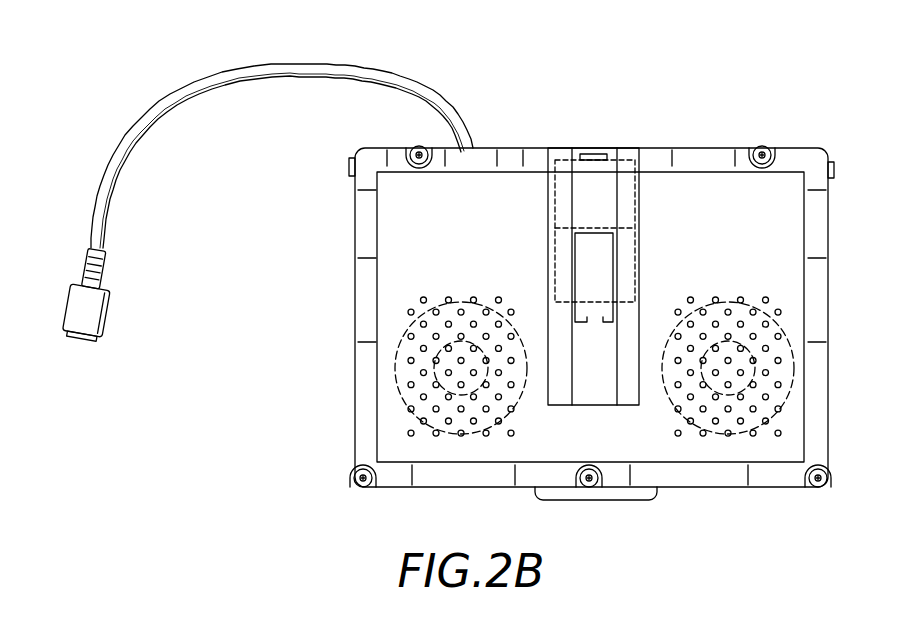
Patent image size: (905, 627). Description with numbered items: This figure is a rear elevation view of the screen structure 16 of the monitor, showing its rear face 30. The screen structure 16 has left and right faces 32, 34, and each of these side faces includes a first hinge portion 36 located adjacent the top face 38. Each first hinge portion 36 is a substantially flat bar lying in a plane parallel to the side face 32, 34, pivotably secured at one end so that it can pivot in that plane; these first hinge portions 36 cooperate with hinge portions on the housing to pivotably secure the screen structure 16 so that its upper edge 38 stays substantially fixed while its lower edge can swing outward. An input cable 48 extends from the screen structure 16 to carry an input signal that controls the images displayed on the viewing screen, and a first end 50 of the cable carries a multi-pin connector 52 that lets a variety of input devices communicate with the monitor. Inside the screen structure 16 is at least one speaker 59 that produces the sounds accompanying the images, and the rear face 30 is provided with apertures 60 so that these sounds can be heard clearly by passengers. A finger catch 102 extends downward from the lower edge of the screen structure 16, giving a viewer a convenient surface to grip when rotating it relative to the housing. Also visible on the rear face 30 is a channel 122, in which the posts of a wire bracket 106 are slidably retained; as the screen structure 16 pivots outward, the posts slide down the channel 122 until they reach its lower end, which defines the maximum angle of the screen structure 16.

The screen structure 16 is at (801, 119).
The rear face 30 is at (503, 183).
The left face 32 is at (829, 290).
The right face 34 is at (352, 318).
The first hinge portion 36 is at (349, 166).
The top face 38 is at (708, 148).
The input cable 48 is at (222, 85).
The first end of the cable 50 is at (93, 245).
The multi-pin connector 52 is at (88, 312).
The speaker 59 is at (396, 360).
The apertures 60 is at (411, 436).
The finger catch 102 is at (600, 501).
The bracket 106 is at (598, 228).
The channel 122 is at (565, 178).